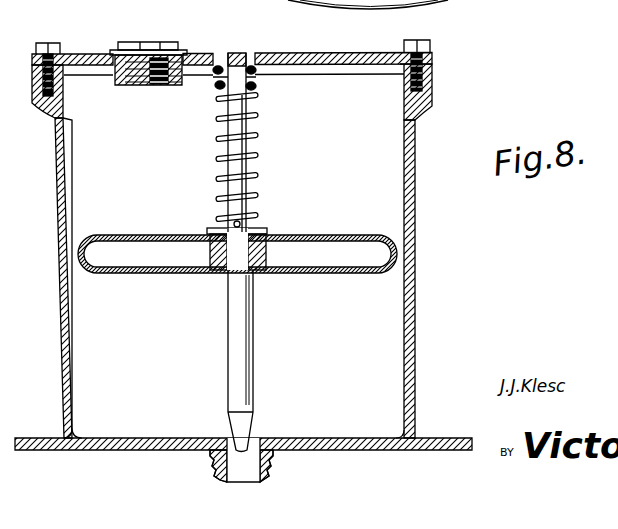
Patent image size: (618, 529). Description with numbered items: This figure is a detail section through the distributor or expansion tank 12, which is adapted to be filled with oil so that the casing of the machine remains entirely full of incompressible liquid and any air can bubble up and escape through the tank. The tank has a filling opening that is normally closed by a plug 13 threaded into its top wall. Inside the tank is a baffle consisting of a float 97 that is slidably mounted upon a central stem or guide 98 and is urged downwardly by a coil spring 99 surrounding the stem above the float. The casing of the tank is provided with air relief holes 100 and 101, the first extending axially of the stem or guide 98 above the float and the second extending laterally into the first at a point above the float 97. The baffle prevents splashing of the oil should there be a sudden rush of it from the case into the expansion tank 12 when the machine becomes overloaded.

The expansion tank 12 is at (415, 140).
The plug 13 is at (143, 53).
The float 97 is at (129, 236).
The stem or guide 98 is at (228, 308).
The coil spring 99 is at (262, 126).
The air relief hole 100 is at (241, 53).
The air relief hole 101 is at (252, 225).